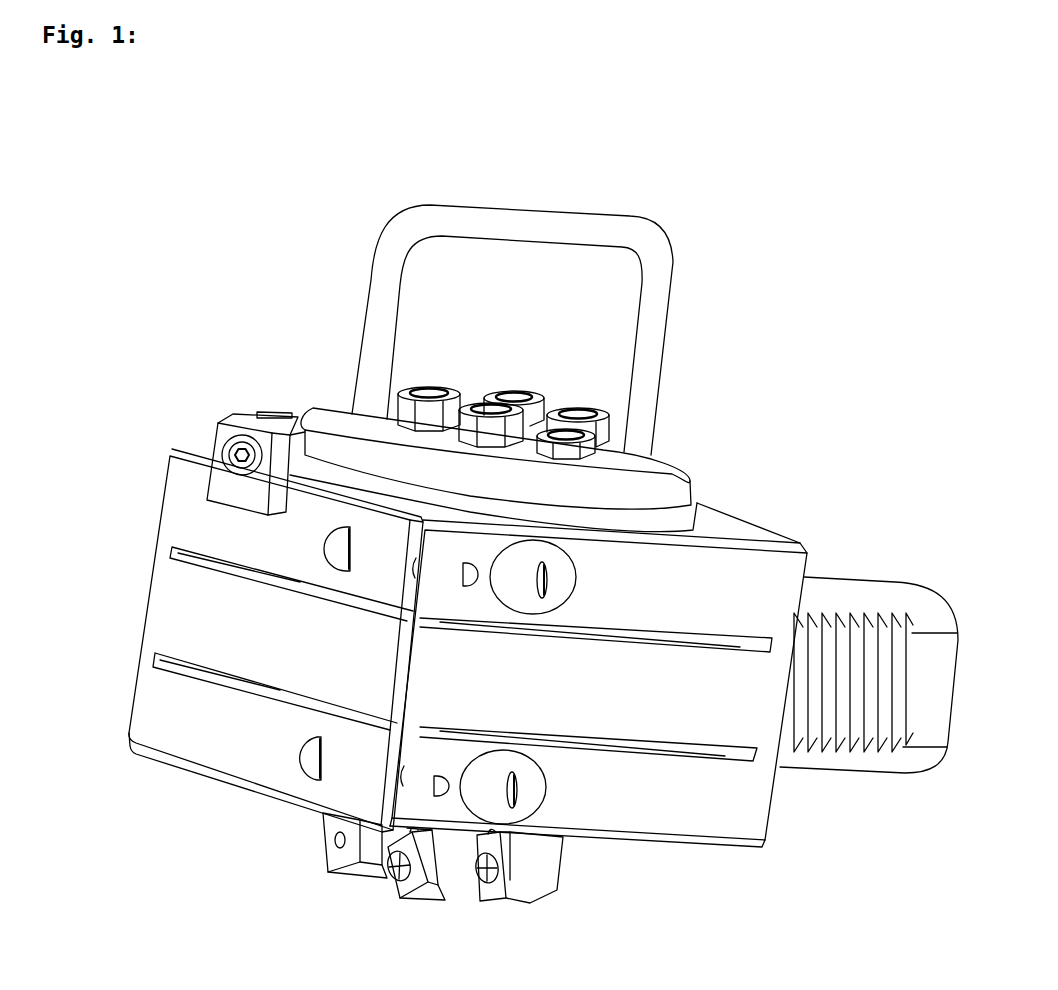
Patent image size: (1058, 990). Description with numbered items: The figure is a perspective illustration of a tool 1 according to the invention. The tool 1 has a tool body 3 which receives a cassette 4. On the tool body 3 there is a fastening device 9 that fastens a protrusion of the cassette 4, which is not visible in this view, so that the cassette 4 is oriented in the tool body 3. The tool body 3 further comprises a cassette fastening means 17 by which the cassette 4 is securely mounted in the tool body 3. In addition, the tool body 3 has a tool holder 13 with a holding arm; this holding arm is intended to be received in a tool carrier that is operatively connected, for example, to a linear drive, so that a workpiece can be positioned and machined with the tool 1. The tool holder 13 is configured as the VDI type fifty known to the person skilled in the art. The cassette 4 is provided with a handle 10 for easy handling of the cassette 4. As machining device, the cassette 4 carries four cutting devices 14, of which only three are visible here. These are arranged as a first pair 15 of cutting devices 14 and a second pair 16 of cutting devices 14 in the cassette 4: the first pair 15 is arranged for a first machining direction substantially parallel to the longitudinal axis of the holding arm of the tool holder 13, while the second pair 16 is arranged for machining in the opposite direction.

The tool 1 is at (508, 124).
The tool body 3 is at (153, 547).
The cassette 4 is at (311, 412).
The fastening device 9 is at (223, 437).
The handle 10 is at (675, 291).
The tool holder 13 is at (890, 579).
The cutting devices 14 is at (493, 899).
The first pair of cutting devices 15 is at (284, 836).
The second pair of cutting devices 16 is at (586, 900).
The cassette fastening means 17 is at (546, 565).